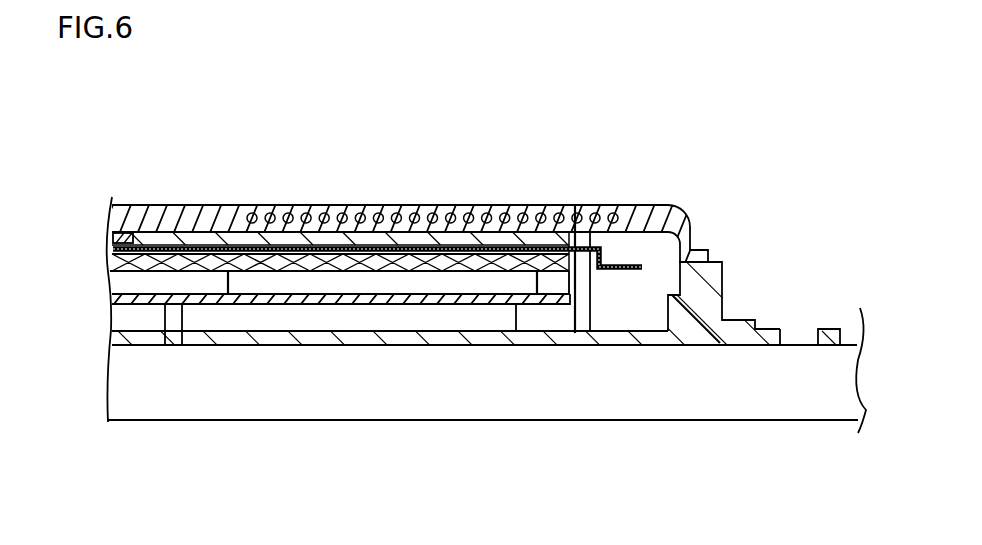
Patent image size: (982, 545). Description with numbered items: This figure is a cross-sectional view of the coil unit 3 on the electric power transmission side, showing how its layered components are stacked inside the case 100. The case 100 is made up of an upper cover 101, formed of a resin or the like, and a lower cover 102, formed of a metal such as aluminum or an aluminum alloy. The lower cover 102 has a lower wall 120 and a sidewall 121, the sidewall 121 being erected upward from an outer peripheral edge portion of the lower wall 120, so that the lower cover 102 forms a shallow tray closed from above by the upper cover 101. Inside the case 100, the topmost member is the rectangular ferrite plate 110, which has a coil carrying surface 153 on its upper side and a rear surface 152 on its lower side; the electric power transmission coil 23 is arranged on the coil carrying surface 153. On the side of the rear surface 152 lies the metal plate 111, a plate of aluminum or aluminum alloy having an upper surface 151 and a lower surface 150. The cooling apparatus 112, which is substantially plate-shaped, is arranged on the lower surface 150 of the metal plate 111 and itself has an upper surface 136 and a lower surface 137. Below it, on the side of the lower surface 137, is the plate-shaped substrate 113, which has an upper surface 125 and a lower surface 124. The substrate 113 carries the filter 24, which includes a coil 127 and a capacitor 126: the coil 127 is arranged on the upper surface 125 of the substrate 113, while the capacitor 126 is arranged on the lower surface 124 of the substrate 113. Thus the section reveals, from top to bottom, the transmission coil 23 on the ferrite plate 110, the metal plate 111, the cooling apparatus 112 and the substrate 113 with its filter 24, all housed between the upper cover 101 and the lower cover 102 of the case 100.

The coil unit 3 is at (360, 98).
The case 100 is at (640, 143).
The upper cover 101 is at (654, 210).
The lower cover 102 is at (713, 270).
The lower wall 120 is at (643, 337).
The sidewall 121 is at (692, 295).
The electric power transmission coil 23 is at (577, 206).
The ferrite plate 110 is at (458, 143).
The coil carrying surface 153 is at (380, 233).
The rear surface 152 is at (450, 252).
The metal plate 111 is at (252, 143).
The upper surface 151 is at (268, 243).
The lower surface 150 is at (331, 252).
The cooling apparatus 112 is at (227, 143).
The upper surface 136 is at (150, 249).
The lower surface 137 is at (215, 272).
The coil 127 is at (522, 283).
The filter 24 is at (536, 218).
The substrate 113 is at (517, 470).
The lower surface 124 is at (447, 295).
The upper surface 125 is at (493, 294).
The capacitor 126 is at (378, 312).